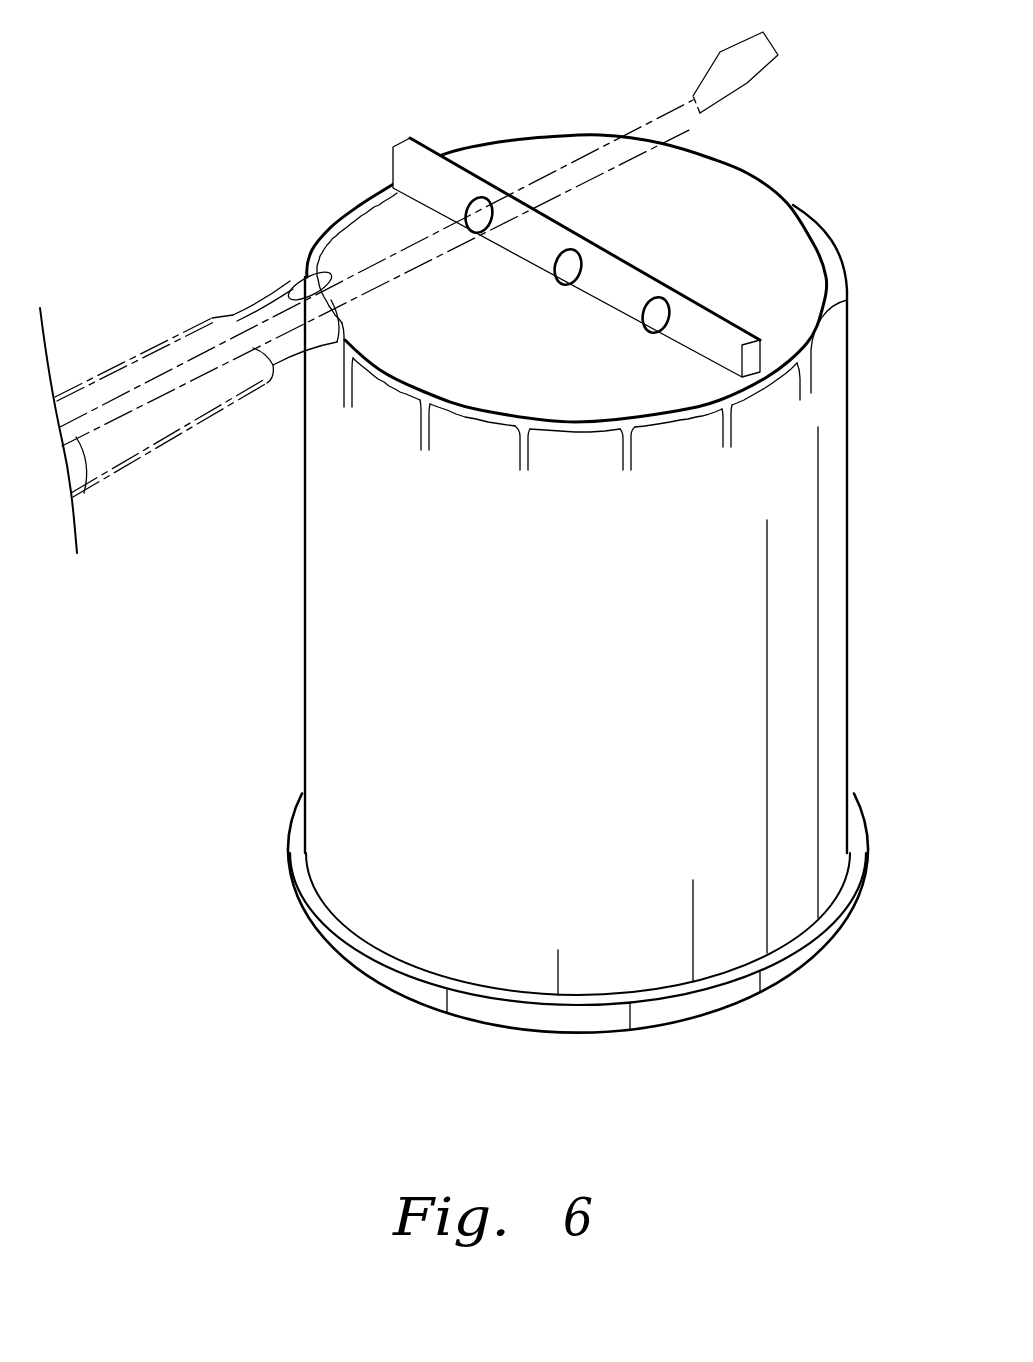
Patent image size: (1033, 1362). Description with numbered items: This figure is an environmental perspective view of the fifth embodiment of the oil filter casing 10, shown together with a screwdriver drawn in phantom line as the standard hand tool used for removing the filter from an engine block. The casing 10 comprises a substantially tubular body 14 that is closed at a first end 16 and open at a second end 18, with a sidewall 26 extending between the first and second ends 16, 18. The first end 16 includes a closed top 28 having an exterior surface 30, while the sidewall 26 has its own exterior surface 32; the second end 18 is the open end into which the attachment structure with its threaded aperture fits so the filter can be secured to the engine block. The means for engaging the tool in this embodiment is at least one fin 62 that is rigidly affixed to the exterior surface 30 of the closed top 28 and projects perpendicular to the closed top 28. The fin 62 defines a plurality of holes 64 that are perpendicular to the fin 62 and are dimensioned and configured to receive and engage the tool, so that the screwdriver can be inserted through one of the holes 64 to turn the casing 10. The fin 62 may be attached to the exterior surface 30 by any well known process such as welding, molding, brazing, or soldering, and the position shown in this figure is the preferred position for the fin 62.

The oil filter casing 10 is at (505, 525).
The tubular body 14 is at (485, 613).
The first end 16 is at (290, 224).
The second end 18 is at (262, 808).
The sidewall 26 is at (594, 652).
The closed top 28 is at (522, 314).
The exterior surface 30 is at (607, 225).
The exterior surface 32 is at (403, 523).
The fin 62 is at (650, 202).
The holes 64 is at (664, 304).